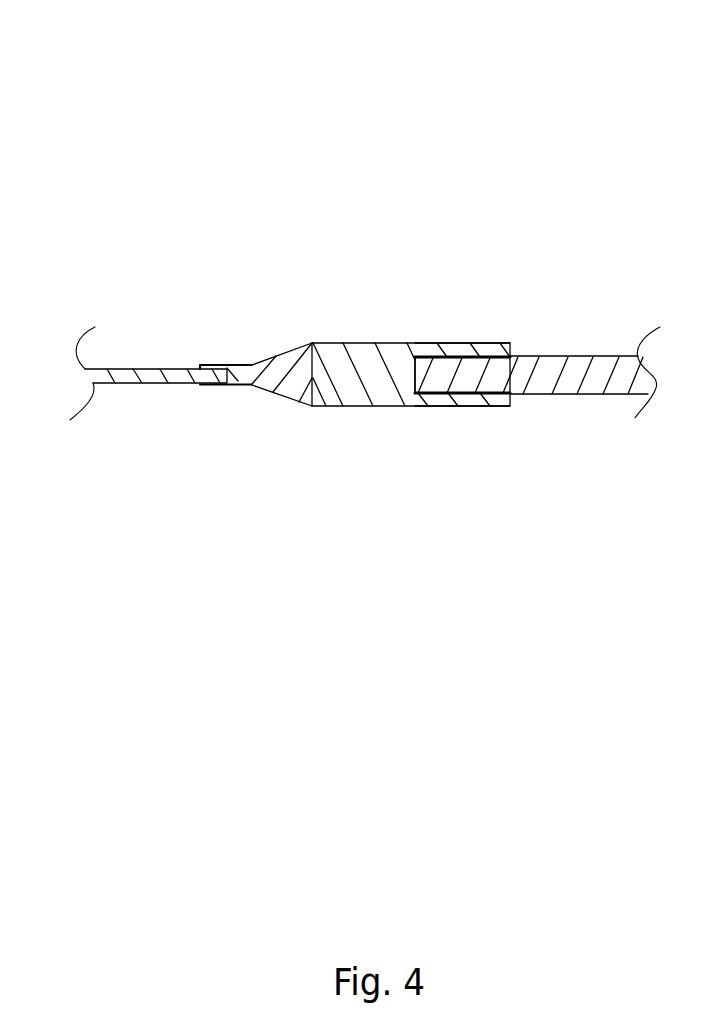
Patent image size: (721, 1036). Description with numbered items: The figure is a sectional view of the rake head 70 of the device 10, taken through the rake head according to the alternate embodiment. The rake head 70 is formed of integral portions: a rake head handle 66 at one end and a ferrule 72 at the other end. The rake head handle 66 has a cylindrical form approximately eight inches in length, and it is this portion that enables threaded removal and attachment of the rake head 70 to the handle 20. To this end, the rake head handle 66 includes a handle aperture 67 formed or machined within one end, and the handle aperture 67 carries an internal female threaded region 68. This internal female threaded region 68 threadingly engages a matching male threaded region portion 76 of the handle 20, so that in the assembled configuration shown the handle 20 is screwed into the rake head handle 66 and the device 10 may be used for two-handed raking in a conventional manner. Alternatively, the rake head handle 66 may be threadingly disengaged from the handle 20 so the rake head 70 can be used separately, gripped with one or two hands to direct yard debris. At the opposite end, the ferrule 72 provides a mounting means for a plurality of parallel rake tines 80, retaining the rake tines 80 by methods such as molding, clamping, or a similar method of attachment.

The device 10 is at (117, 182).
The handle 20 is at (567, 357).
The rake head handle 66 is at (440, 345).
The handle aperture 67 is at (448, 393).
The internal female threaded region 68 is at (485, 345).
The rake head 70 is at (207, 397).
The ferrule 72 is at (282, 355).
The male threaded region portion 76 is at (511, 357).
The rake tines 80 is at (167, 368).